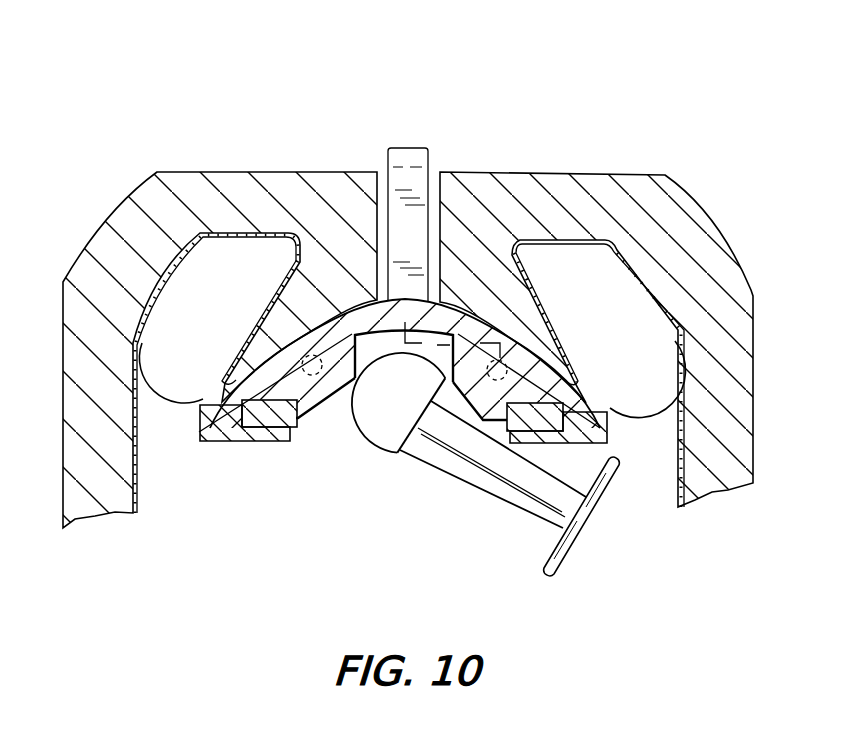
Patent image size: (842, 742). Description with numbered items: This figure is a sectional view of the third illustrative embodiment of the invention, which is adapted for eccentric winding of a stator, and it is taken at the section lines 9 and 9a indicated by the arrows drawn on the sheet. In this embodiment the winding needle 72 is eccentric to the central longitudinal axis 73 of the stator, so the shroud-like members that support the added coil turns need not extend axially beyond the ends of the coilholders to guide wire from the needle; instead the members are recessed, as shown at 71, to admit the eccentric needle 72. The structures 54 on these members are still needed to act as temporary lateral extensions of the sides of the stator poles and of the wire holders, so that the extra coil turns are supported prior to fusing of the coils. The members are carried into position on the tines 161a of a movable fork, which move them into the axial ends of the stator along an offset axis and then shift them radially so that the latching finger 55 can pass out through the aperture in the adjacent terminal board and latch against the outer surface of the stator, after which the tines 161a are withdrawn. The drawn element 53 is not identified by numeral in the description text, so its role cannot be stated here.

The liner spring clip 53 is at (222, 376).
The structures 54 is at (213, 441).
The latching finger 55 is at (393, 193).
The recess 71 is at (473, 320).
The needle 72 is at (544, 481).
The central longitudinal axis 73 is at (400, 514).
The tines 161a is at (300, 428).
The section line 9 is at (408, 133).
The section line 9a is at (197, 154).